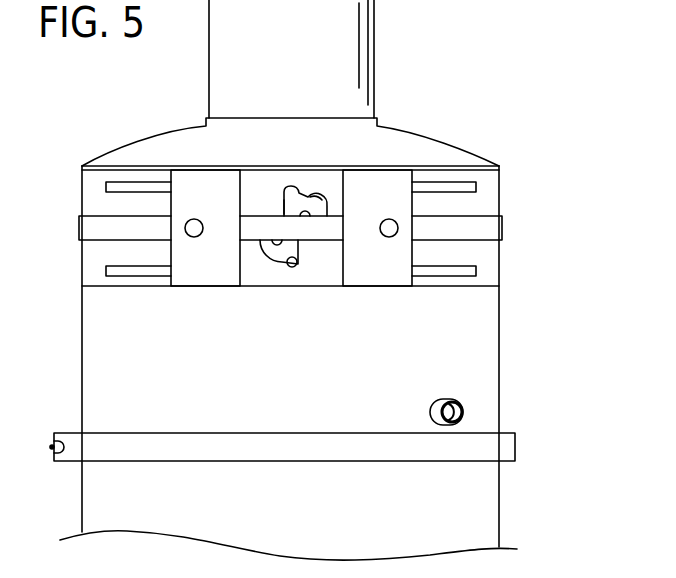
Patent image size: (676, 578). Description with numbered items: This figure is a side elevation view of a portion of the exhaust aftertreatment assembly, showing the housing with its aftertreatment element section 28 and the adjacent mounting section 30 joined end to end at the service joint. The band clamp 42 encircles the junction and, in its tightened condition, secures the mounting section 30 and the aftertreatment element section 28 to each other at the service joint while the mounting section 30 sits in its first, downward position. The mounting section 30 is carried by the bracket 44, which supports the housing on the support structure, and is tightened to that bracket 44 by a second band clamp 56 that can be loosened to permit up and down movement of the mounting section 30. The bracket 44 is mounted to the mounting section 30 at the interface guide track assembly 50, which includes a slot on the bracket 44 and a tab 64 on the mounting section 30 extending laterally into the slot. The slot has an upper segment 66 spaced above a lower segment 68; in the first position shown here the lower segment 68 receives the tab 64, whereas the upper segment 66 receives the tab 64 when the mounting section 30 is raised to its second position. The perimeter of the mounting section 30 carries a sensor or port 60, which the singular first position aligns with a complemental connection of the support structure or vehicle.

The aftertreatment element section 28 is at (500, 510).
The mounting section 30 is at (500, 363).
The band clamp 42 is at (503, 447).
The bracket 44 is at (284, 176).
The interface guide track assembly 50 is at (283, 198).
The band clamp 56 is at (497, 228).
The sensor or port 60 is at (432, 415).
The tab 64 is at (295, 267).
The upper segment 66 is at (309, 197).
The lower segment 68 is at (281, 254).